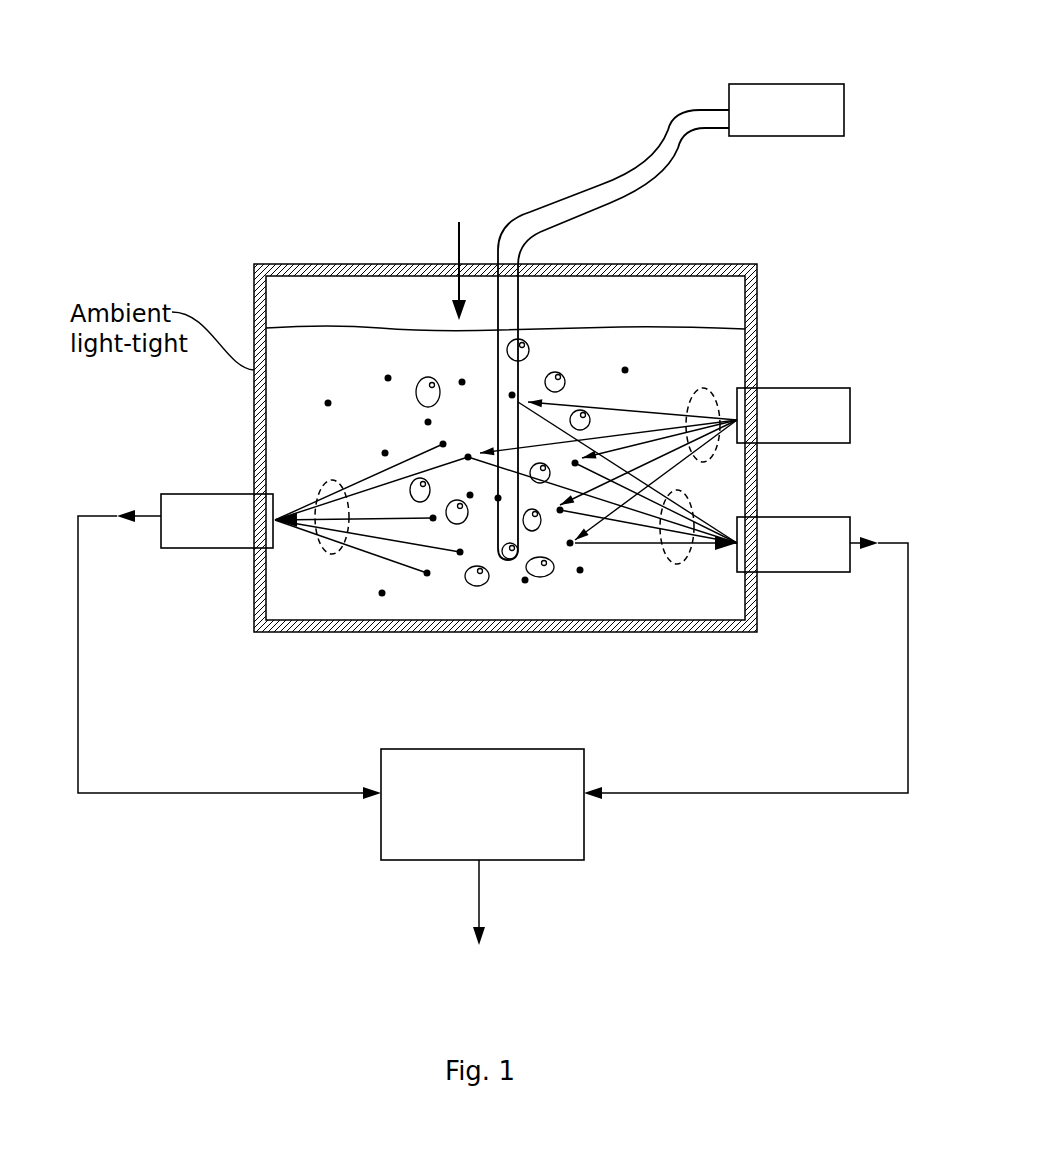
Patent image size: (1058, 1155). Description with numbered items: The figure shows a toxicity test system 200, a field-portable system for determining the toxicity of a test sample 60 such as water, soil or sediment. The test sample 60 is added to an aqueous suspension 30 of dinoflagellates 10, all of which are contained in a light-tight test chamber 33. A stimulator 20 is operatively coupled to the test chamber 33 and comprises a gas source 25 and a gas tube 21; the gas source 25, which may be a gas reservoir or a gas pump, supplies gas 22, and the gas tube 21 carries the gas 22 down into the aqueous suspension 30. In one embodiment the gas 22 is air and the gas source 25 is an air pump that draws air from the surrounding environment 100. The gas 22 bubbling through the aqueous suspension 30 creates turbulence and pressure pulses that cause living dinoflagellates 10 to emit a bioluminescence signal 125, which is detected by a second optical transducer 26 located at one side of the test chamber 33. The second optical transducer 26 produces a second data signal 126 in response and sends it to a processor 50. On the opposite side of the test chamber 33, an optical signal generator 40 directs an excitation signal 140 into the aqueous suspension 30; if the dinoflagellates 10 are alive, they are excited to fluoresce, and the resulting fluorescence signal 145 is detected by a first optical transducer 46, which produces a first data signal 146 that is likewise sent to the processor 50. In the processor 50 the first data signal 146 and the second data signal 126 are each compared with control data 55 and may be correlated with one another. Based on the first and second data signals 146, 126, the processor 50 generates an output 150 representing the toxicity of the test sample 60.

The toxicity test system 200 is at (258, 87).
The surrounding environment 100 is at (588, 376).
The dinoflagellates 10 is at (427, 576).
The stimulator 20 is at (843, 76).
The gas tube 21 is at (518, 312).
The gas 22 is at (503, 683).
The gas source 25 is at (776, 136).
The second optical transducer 26 is at (170, 548).
The aqueous suspension 30 is at (327, 340).
The test chamber 33 is at (254, 470).
The optical signal generator 40 is at (823, 388).
The first optical transducer 46 is at (823, 517).
The processor 50 is at (402, 860).
The control data 55 is at (482, 804).
The test sample 60 is at (445, 92).
The bioluminescence signal 125 is at (331, 555).
The second data signal 126 is at (78, 737).
The excitation signal 140 is at (705, 388).
The fluorescence signal 145 is at (677, 565).
The first data signal 146 is at (907, 713).
The output 150 is at (480, 892).